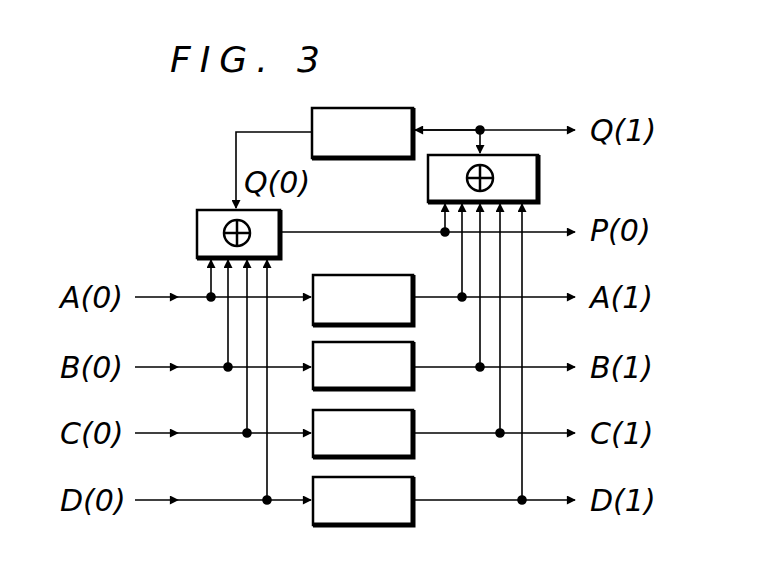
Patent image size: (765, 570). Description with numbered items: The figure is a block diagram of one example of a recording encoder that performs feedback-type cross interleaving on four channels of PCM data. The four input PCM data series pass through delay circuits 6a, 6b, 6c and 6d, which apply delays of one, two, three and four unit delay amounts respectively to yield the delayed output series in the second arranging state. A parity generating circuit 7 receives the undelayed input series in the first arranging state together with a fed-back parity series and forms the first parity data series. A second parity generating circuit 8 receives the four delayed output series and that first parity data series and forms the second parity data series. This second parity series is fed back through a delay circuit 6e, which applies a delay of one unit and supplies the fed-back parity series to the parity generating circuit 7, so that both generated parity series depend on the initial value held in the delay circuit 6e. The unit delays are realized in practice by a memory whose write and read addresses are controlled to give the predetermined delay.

The delay circuit 6e is at (372, 108).
The parity generating circuit 8 is at (428, 172).
The parity generating circuit 7 is at (197, 224).
The delay circuit 6a is at (413, 302).
The delay circuit 6b is at (413, 371).
The delay circuit 6c is at (413, 438).
The delay circuit 6d is at (413, 505).